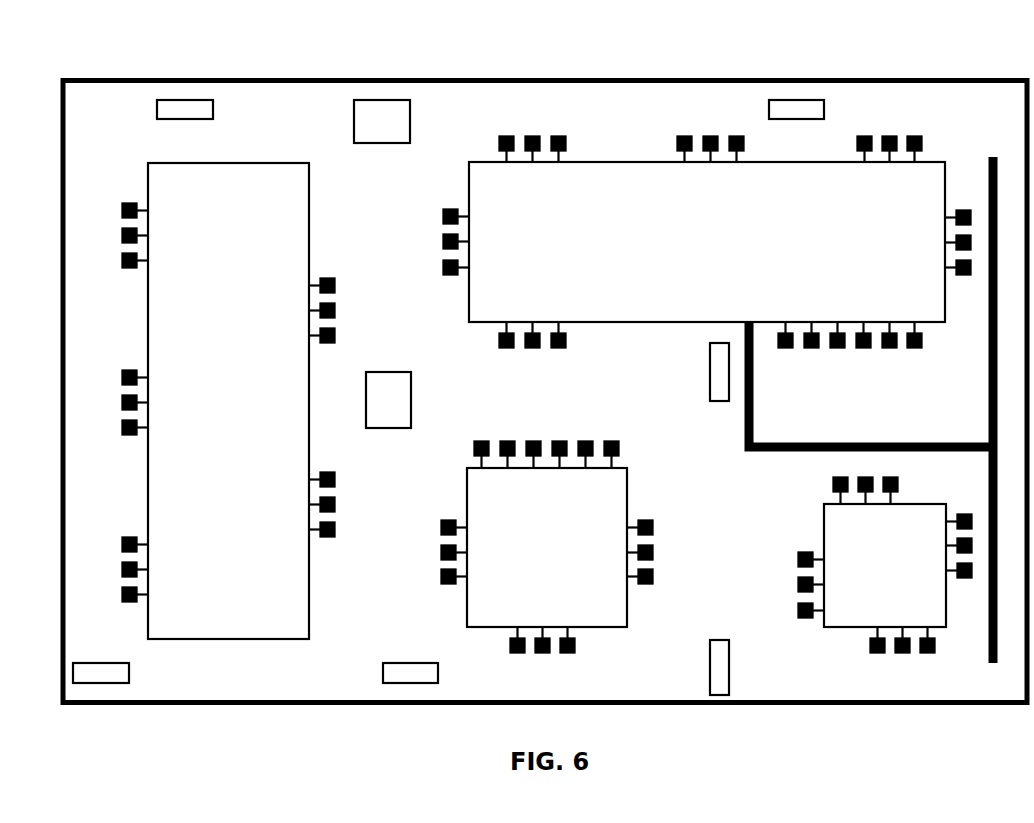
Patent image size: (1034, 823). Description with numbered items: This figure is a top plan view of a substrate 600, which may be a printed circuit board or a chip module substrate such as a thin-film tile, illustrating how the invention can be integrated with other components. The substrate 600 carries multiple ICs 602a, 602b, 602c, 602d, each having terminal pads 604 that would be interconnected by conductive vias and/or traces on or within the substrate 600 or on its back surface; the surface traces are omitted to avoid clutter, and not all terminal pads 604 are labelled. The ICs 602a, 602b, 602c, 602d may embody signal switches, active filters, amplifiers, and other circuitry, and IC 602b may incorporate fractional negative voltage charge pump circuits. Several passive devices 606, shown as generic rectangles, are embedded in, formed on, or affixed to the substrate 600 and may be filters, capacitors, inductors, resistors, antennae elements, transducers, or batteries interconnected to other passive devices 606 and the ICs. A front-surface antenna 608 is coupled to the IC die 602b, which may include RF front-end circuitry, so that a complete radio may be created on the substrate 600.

The substrate 600 is at (582, 78).
The IC 602a is at (148, 163).
The IC 602b is at (650, 162).
The IC 602c is at (467, 501).
The IC 602d is at (823, 532).
The terminal pads 604 is at (440, 216).
The passive devices 606 is at (213, 110).
The front-surface antenna 608 is at (918, 443).